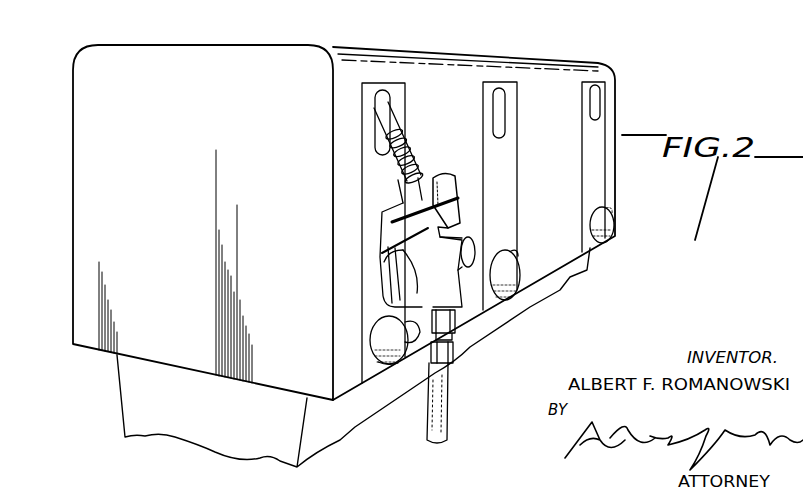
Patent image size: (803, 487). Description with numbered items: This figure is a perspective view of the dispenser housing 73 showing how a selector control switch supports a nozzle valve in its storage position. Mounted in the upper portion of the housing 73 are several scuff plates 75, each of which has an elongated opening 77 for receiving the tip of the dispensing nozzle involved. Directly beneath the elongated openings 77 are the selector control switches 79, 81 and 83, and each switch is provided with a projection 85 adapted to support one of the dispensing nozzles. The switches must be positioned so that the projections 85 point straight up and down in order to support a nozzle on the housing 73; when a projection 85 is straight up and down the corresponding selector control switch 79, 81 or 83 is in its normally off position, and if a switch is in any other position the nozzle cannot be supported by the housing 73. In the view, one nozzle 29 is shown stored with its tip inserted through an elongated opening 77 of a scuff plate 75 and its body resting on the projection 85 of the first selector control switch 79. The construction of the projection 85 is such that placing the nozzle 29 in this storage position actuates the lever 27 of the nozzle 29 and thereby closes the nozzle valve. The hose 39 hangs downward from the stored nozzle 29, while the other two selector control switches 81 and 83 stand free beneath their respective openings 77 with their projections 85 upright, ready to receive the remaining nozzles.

The housing 73 is at (271, 56).
The scuff plates 75 is at (398, 104).
The elongated opening 77 is at (378, 137).
The nozzle 29 is at (447, 186).
The lever 27 is at (410, 278).
The projection 85 is at (375, 310).
The selector control switch 81 is at (518, 278).
The selector control switch 83 is at (611, 234).
The selector control switch 79 is at (383, 368).
The hose 39 is at (450, 400).